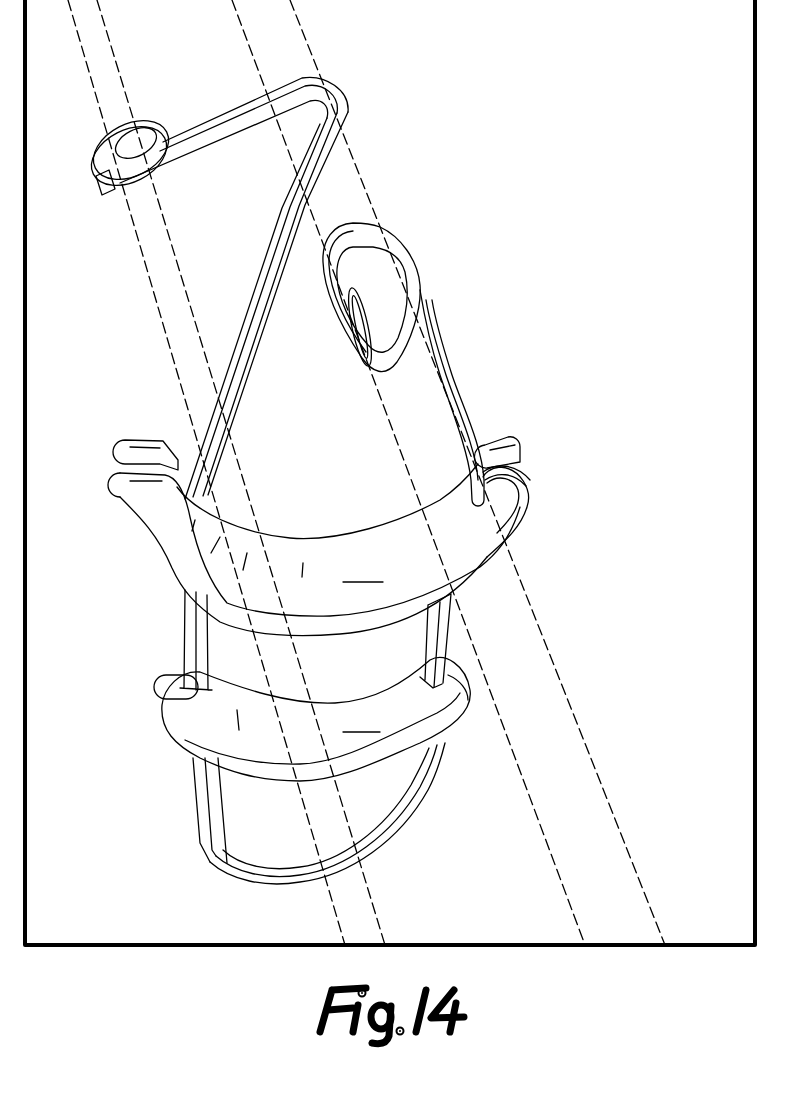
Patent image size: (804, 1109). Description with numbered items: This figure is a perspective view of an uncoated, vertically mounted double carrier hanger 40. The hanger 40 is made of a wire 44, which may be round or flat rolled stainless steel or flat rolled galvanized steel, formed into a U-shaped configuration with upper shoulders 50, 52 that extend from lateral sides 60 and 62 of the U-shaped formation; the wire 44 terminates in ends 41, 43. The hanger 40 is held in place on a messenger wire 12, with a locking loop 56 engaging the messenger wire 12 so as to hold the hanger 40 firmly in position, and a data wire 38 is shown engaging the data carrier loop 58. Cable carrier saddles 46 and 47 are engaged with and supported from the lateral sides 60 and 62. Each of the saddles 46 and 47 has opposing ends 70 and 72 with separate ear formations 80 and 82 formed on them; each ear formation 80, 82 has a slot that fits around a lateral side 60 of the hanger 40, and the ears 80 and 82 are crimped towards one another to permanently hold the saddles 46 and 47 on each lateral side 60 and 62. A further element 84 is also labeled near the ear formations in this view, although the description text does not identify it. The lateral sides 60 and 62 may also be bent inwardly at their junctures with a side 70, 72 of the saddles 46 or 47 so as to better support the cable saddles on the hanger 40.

The messenger wire 12 is at (367, 190).
The data wire 38 is at (83, 50).
The hanger 40 is at (250, 880).
The end 41 is at (108, 185).
The end 43 is at (348, 327).
The wire 44 is at (400, 827).
The cable carrier saddle 46 is at (327, 523).
The cable carrier saddle 47 is at (316, 719).
The upper shoulder 50 is at (243, 310).
The upper shoulder 52 is at (460, 387).
The locking loop 56 is at (333, 93).
The data carrier loop 58 is at (150, 110).
The lateral side 60 is at (443, 645).
The lateral side 62 is at (183, 633).
The end 70 is at (513, 557).
The end 72 is at (153, 515).
The ear formation 80 is at (532, 500).
The ear formation 82 is at (523, 443).
The catch 84 is at (507, 470).